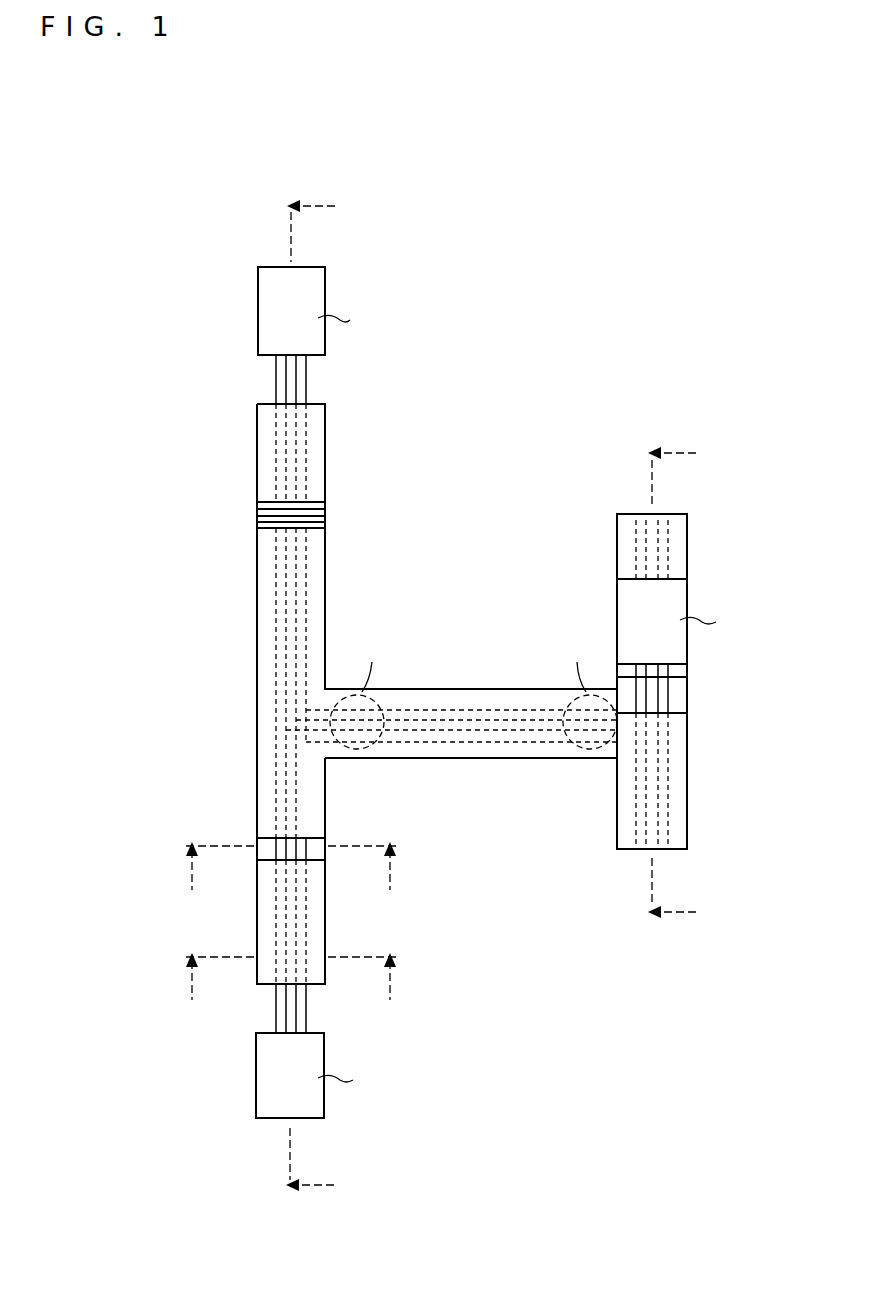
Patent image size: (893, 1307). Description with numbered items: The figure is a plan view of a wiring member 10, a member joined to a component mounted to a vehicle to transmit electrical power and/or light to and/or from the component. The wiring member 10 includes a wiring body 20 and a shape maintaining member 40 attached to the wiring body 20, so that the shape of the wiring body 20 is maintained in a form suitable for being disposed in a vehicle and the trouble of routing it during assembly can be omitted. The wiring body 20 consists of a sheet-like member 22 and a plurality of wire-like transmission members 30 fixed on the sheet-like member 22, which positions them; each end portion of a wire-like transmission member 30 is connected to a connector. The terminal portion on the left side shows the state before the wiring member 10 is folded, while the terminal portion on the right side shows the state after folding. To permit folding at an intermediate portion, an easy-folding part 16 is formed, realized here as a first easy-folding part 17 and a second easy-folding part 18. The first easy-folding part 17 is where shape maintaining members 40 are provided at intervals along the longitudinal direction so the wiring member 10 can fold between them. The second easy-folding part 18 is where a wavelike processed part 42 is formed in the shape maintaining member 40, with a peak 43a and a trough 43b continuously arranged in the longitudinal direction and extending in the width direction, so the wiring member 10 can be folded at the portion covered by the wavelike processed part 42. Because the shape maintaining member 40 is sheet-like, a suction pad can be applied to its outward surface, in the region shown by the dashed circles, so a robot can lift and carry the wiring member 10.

The wiring member 10 is at (154, 168).
The easy-folding part 16 is at (297, 678).
The first easy-folding part 17 is at (246, 836).
The second easy-folding part 18 is at (297, 525).
The wiring body 20 is at (392, 776).
The sheet-like member 22 is at (678, 548).
The wire-like transmission member 30 is at (288, 370).
The shape maintaining member 40 is at (270, 454).
The wavelike processed part 42 is at (234, 527).
The peak 43a is at (258, 526).
The trough 43b is at (258, 515).